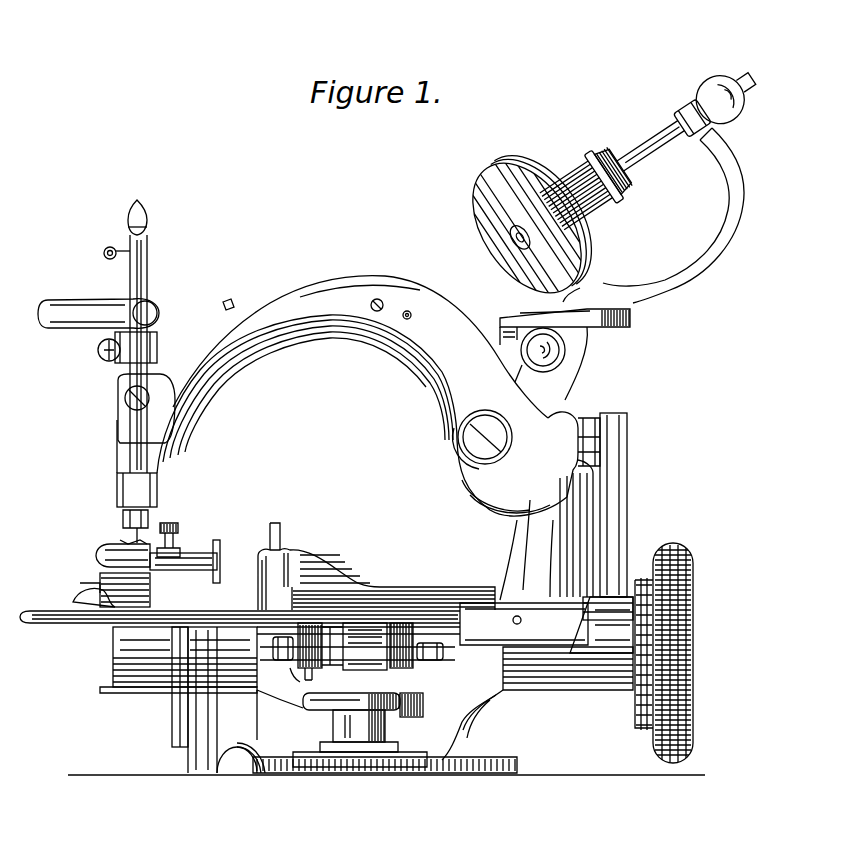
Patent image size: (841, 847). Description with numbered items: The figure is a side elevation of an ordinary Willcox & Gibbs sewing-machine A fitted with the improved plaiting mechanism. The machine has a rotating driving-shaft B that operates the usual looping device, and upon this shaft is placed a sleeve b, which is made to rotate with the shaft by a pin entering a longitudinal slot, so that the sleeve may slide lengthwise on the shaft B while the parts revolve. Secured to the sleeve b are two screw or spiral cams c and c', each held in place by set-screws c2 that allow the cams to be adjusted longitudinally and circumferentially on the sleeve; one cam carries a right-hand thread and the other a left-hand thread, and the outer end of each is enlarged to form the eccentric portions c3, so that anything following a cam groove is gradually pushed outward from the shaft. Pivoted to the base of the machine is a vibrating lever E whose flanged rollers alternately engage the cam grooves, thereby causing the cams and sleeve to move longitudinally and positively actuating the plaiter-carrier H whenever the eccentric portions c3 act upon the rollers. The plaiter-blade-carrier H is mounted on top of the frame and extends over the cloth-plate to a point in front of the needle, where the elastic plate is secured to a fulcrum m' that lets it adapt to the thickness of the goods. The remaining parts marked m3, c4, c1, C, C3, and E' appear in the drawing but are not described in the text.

The sewing-machine A is at (378, 426).
The plaiter-blade-carrier H is at (286, 553).
The fulcrum m' is at (114, 553).
The thumb screws m3 is at (180, 533).
The rotating shaft B is at (275, 668).
The sleeve b is at (357, 646).
The screw or spiral cam c is at (315, 645).
The screw or spiral cam c' is at (390, 645).
The set-screws c2 is at (292, 648).
The eccentric portions c3 is at (292, 676).
The collar c4 is at (429, 644).
The cam lever c1 is at (312, 680).
The bearing bracket C is at (351, 698).
The bearing block C3 is at (425, 690).
The vibrating lever E is at (386, 701).
The pedestal E' is at (360, 738).